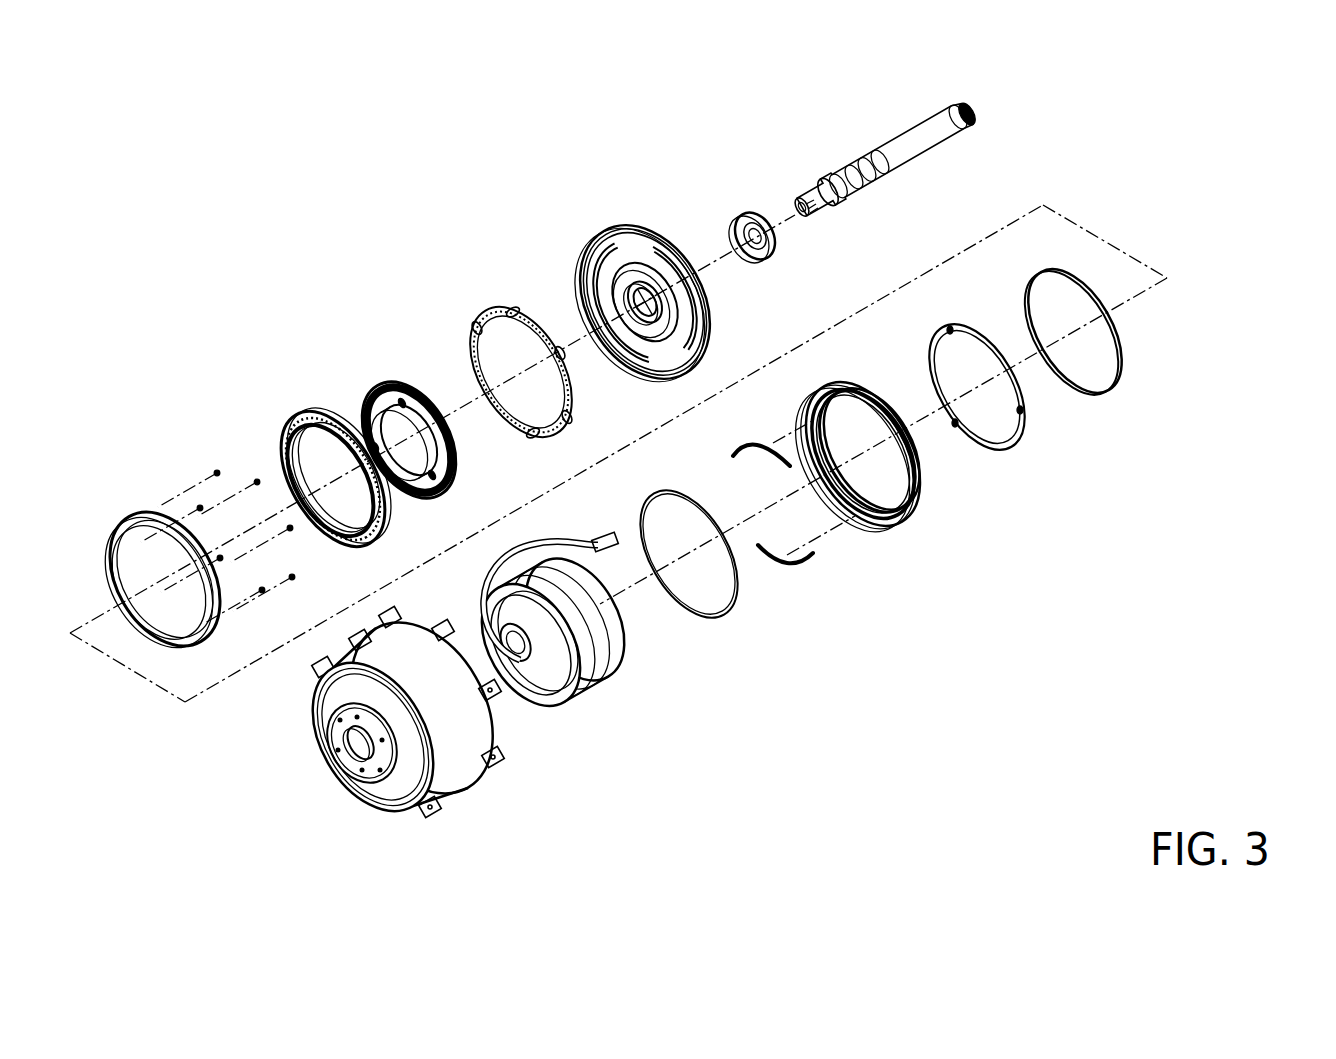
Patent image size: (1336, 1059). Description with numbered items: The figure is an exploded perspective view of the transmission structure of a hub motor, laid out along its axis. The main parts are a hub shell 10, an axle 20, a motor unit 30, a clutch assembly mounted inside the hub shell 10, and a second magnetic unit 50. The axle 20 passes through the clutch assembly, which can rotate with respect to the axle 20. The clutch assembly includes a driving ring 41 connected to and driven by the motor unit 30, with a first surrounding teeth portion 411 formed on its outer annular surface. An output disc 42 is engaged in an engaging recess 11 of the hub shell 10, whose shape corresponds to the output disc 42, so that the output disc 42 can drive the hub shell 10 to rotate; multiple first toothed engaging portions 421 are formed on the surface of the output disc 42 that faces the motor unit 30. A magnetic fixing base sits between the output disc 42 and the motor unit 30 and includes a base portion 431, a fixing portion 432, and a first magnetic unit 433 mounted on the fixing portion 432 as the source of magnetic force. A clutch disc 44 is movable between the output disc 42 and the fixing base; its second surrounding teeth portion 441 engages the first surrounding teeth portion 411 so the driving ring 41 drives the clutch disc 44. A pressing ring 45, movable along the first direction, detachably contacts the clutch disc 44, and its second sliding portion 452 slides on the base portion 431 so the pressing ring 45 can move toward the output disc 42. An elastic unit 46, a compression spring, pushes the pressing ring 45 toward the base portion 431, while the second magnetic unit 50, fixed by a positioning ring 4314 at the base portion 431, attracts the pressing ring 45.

The hub shell 10 is at (624, 268).
The engaging recess 11 is at (602, 242).
The axle 20 is at (935, 130).
The motor unit 30 is at (628, 656).
The driving ring 41 is at (406, 393).
The first surrounding teeth portion 411 is at (390, 385).
The output disc 42 is at (515, 331).
The first toothed engaging portions 421 is at (488, 318).
The base portion 431 is at (923, 467).
The fixing portion 432 is at (148, 515).
The first magnetic unit 433 is at (216, 472).
The positioning ring 4314 is at (730, 612).
The clutch disc 44 is at (304, 447).
The second surrounding teeth portion 441 is at (292, 447).
The pressing ring 45 is at (1032, 420).
The second sliding portion 452 is at (1025, 425).
The elastic unit 46 is at (1120, 384).
The second magnetic unit 50 is at (805, 556).